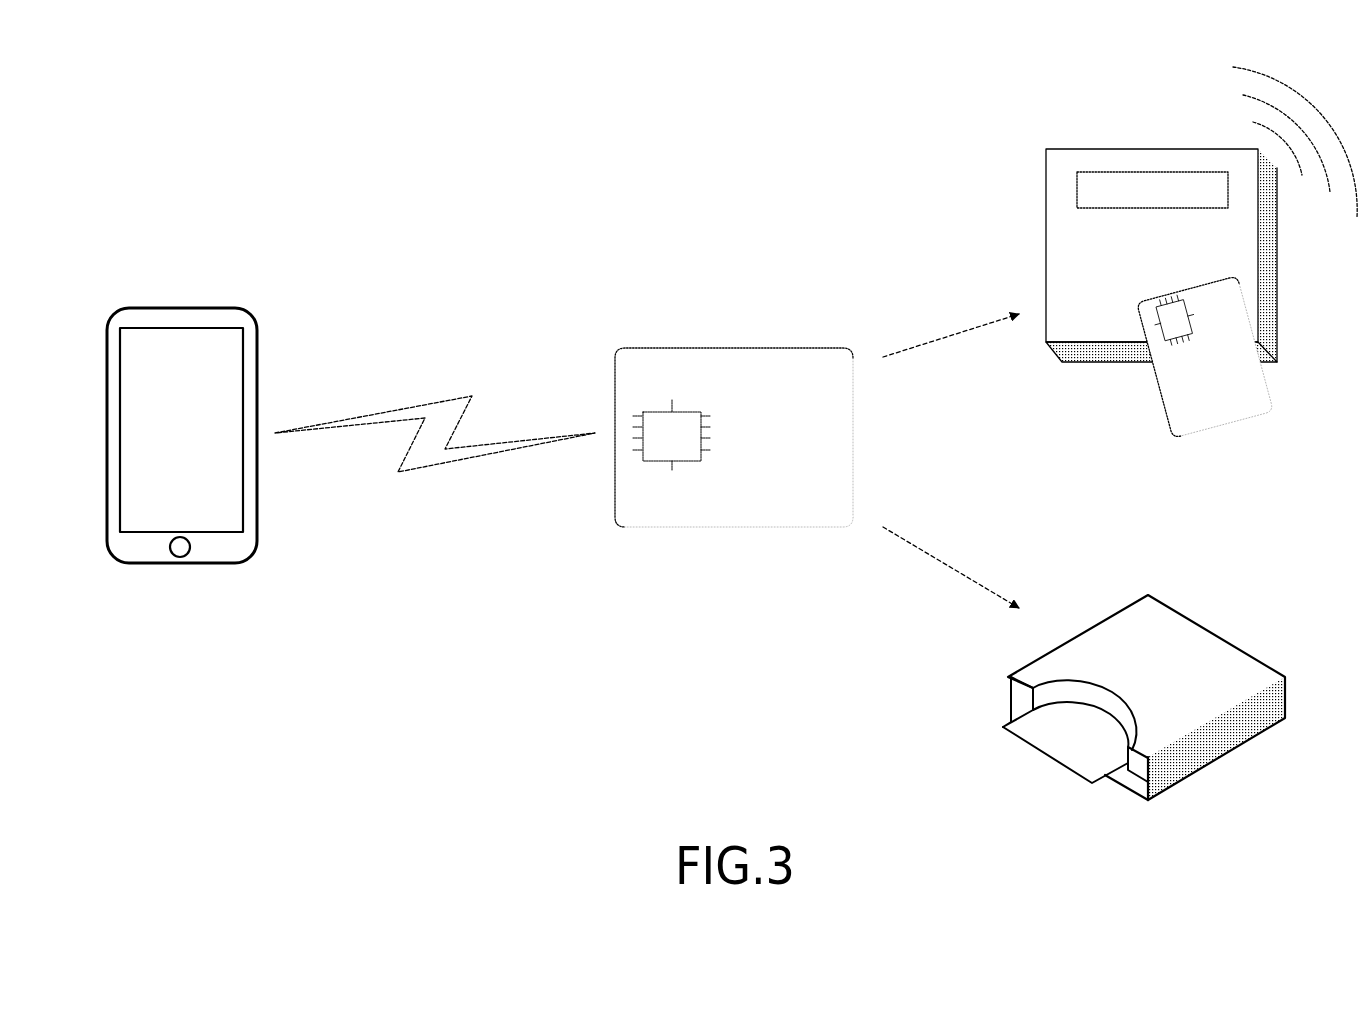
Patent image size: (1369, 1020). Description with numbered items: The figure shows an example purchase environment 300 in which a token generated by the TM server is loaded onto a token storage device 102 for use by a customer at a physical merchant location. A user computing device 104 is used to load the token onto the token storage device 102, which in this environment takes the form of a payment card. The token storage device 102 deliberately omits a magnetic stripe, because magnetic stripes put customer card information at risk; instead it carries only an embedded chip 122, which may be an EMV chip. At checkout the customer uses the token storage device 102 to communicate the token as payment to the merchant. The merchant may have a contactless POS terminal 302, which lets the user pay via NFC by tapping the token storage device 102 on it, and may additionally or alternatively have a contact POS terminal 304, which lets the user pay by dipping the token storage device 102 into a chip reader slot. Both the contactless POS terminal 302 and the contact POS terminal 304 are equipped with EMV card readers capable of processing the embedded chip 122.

The purchase environment 300 is at (422, 82).
The user computing device 104 is at (223, 306).
The token storage device 102 is at (770, 344).
The embedded chip 122 is at (685, 408).
The contactless POS terminal 302 is at (1065, 140).
The contact POS terminal 304 is at (1207, 622).